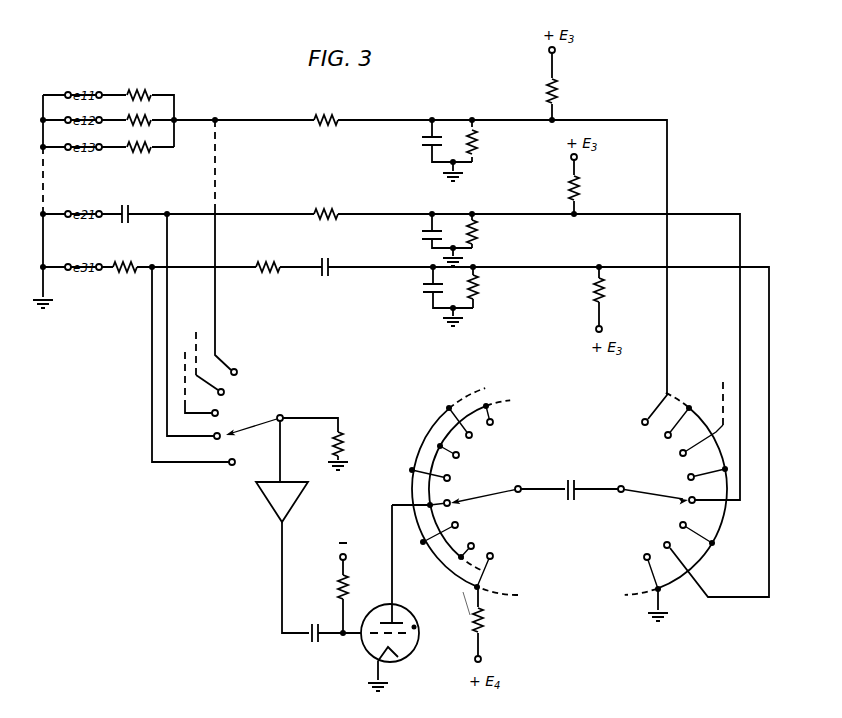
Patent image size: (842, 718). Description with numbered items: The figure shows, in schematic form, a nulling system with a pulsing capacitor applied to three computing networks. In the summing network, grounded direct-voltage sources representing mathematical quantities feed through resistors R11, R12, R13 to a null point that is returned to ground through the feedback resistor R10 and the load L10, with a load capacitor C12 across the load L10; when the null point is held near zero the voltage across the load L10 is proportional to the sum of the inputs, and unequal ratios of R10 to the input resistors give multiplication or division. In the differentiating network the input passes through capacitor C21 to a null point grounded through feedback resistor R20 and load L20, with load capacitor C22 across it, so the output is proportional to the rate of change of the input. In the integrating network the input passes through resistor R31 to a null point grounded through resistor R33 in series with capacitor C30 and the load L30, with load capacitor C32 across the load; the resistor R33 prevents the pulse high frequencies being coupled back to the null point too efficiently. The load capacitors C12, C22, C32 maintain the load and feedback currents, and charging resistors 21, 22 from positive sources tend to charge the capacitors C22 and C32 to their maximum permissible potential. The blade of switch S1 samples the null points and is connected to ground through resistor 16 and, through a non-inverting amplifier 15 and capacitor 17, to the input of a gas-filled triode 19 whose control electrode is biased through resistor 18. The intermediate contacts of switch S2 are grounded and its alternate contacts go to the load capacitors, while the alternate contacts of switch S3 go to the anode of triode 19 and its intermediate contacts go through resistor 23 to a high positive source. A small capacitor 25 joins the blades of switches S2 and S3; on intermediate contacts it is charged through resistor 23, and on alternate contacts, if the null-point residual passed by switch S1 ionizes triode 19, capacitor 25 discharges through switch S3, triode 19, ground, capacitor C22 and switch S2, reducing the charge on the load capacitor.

The input resistor R11 is at (144, 86).
The input resistor R12 is at (130, 116).
The input resistor R13 is at (130, 143).
The feedback resistor R10 is at (323, 108).
The load capacitor C12 is at (422, 141).
The load L10 is at (480, 136).
The capacitor C21 is at (129, 211).
The feedback resistor R20 is at (299, 202).
The load capacitor C22 is at (422, 237).
The load L20 is at (480, 230).
The resistor R31 is at (131, 265).
The feedback resistor R33 is at (288, 257).
The feedback capacitor C30 is at (328, 263).
The load capacitor C32 is at (422, 290).
The load L30 is at (480, 283).
The charging resistor 21 is at (583, 182).
The charging resistor 22 is at (606, 286).
The switch S1 is at (243, 420).
The resistor 16 is at (346, 438).
The amplifier 15 is at (297, 502).
The capacitor 17 is at (305, 642).
The resistor 18 is at (348, 583).
The gas-filled triode 19 is at (408, 616).
The switch S3 is at (481, 468).
The small capacitor 25 is at (576, 484).
The switch S2 is at (657, 468).
The resistor 23 is at (487, 620).